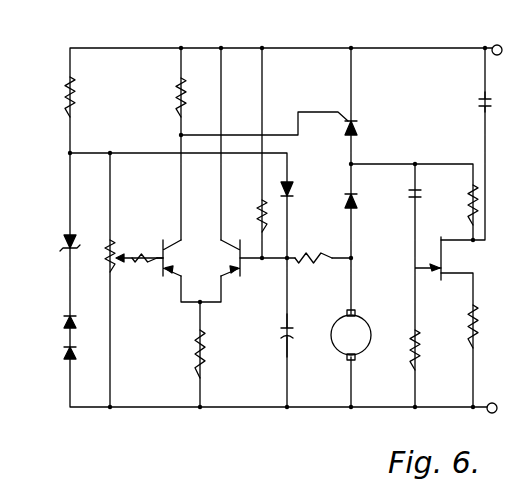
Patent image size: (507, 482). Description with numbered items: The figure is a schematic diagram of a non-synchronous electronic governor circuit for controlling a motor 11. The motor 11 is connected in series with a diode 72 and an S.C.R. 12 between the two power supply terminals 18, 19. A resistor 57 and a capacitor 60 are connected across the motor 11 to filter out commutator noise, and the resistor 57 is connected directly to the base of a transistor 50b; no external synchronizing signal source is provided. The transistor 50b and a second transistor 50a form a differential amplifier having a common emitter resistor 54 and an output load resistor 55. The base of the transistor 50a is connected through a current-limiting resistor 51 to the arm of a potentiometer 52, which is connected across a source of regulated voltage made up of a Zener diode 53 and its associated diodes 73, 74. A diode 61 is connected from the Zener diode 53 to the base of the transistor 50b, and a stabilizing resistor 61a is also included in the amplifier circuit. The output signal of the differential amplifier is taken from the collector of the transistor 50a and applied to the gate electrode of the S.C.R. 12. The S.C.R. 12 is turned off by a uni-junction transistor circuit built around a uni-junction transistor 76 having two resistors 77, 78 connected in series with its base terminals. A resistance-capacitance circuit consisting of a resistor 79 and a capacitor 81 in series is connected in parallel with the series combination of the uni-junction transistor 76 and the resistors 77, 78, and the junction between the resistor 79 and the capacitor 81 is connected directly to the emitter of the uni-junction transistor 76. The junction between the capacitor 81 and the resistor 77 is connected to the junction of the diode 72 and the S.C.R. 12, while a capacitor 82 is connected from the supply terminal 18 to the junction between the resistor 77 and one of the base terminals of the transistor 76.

The motor 11 is at (346, 356).
The S.C.R. 12 is at (360, 128).
The power supply terminal 18 is at (496, 45).
The power supply terminal 19 is at (493, 413).
The transistor 50a is at (166, 272).
The transistor 50b is at (222, 258).
The current-limiting resistor 51 is at (142, 255).
The potentiometer 52 is at (121, 262).
The Zener diode 53 is at (68, 237).
The common emitter resistor 54 is at (206, 352).
The output load resistor 55 is at (176, 97).
The resistor 57 is at (314, 265).
The capacitor 60 is at (290, 326).
The diode 61 is at (291, 186).
The stabilizing resistor 61a is at (258, 208).
The diode 72 is at (346, 204).
The diode 73 is at (64, 322).
The diode 74 is at (64, 351).
The uni-junction transistor 76 is at (446, 262).
The resistor 77 is at (470, 192).
The resistor 78 is at (480, 325).
The resistor 79 is at (408, 360).
The capacitor 81 is at (411, 196).
The capacitor 82 is at (478, 104).